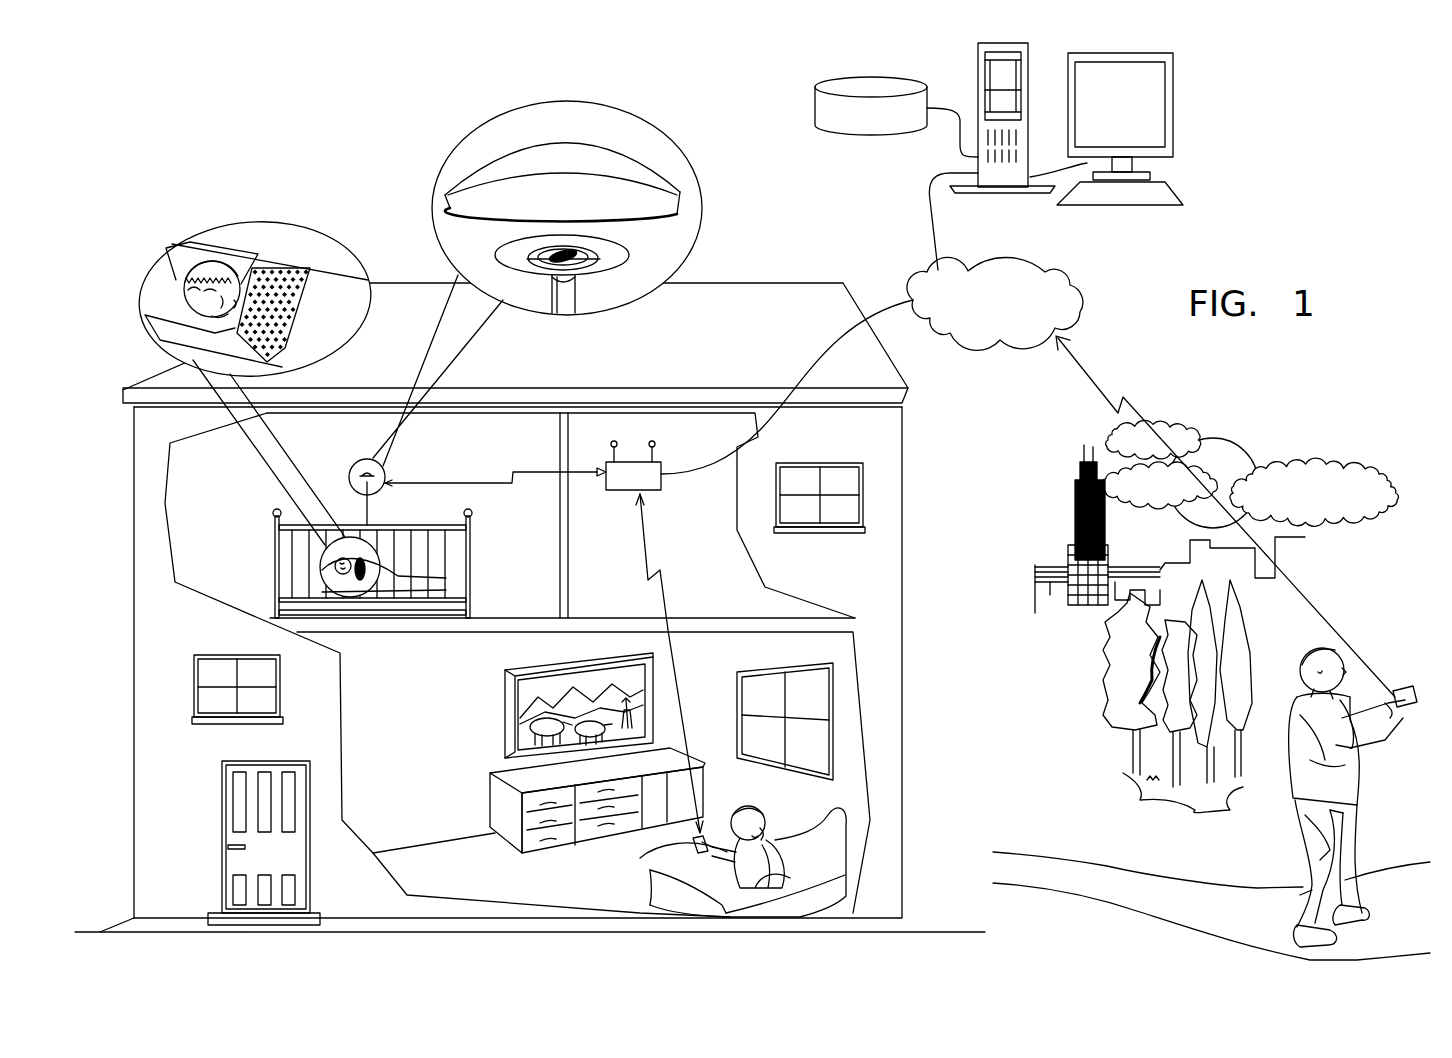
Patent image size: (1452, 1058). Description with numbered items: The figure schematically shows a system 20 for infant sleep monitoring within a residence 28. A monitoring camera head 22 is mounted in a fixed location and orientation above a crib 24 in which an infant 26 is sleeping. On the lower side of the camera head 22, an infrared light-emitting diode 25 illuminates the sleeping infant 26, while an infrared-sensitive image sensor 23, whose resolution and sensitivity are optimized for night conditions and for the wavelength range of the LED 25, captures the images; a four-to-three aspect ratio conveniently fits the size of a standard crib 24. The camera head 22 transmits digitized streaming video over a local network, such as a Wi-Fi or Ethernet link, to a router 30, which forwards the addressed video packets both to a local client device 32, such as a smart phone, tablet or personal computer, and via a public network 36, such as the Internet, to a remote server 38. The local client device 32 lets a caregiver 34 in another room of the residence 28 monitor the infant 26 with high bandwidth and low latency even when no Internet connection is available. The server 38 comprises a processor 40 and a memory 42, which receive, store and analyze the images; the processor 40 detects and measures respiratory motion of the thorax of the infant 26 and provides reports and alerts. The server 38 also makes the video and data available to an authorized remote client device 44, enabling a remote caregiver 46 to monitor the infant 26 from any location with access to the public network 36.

The system 20 is at (352, 140).
The monitoring camera head 22 is at (492, 148).
The infrared-sensitive image sensor 23 is at (573, 243).
The crib 24 is at (275, 547).
The infrared light-emitting diode 25 is at (563, 245).
The infant 26 is at (182, 270).
The residence 28 is at (905, 623).
The router 30 is at (615, 492).
The local client device 32 is at (640, 858).
The caregiver 34 is at (748, 812).
The public network 36 is at (930, 276).
The remote server 38 is at (1188, 207).
The processor 40 is at (1052, 83).
The memory 42 is at (877, 135).
The remote client device 44 is at (1405, 690).
The caregiver 46 is at (1305, 767).